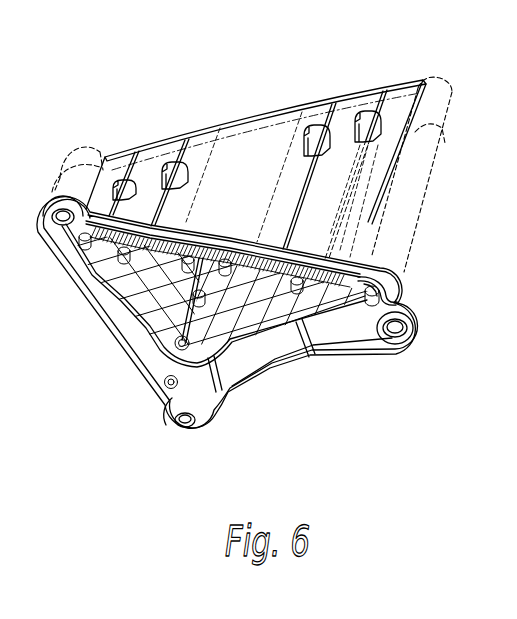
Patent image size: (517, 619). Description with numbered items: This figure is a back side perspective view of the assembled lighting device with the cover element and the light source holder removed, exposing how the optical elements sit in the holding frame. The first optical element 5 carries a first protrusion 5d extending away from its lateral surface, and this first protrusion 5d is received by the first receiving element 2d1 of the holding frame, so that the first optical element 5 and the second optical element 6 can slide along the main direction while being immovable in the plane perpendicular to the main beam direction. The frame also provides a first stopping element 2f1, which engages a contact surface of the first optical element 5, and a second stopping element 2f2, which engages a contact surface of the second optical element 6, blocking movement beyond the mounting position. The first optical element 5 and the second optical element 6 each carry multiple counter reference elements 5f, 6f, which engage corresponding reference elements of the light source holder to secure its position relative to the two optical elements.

The first receiving element 2d1 is at (372, 143).
The first stopping element 2f1 is at (370, 113).
The second stopping element 2f2 is at (50, 198).
The first optical element 5 is at (165, 146).
The first protrusion 5d is at (145, 202).
The counter reference element 5f is at (135, 262).
The second optical element 6 is at (108, 162).
The counter reference element 6f is at (186, 389).